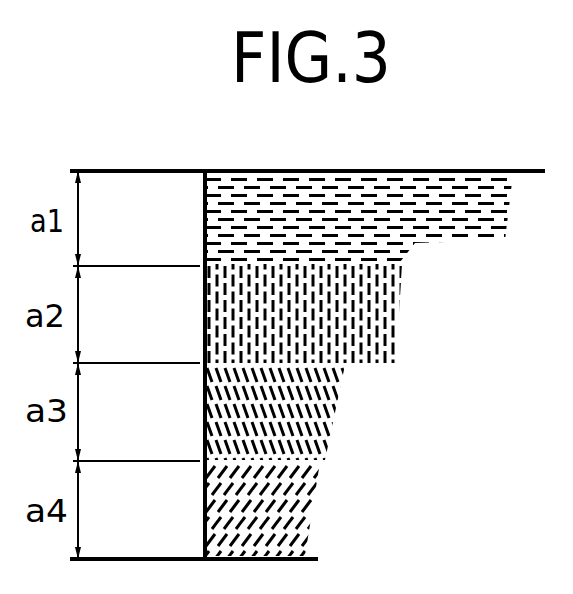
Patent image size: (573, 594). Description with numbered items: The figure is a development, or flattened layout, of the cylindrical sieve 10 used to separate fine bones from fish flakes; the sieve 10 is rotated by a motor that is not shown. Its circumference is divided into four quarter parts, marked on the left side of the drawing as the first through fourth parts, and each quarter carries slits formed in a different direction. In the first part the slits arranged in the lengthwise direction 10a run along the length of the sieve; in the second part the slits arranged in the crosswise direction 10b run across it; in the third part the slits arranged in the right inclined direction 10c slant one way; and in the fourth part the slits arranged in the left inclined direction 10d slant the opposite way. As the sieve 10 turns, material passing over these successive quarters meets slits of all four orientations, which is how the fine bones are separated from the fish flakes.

The sieve for separation of fine bones 10 is at (307, 323).
The slits arranged in lengthwise direction 10a is at (426, 253).
The slits arranged in crosswise direction 10b is at (404, 343).
The slits arranged in right inclined direction 10c is at (339, 432).
The slits arranged in left inclined direction 10d is at (321, 517).